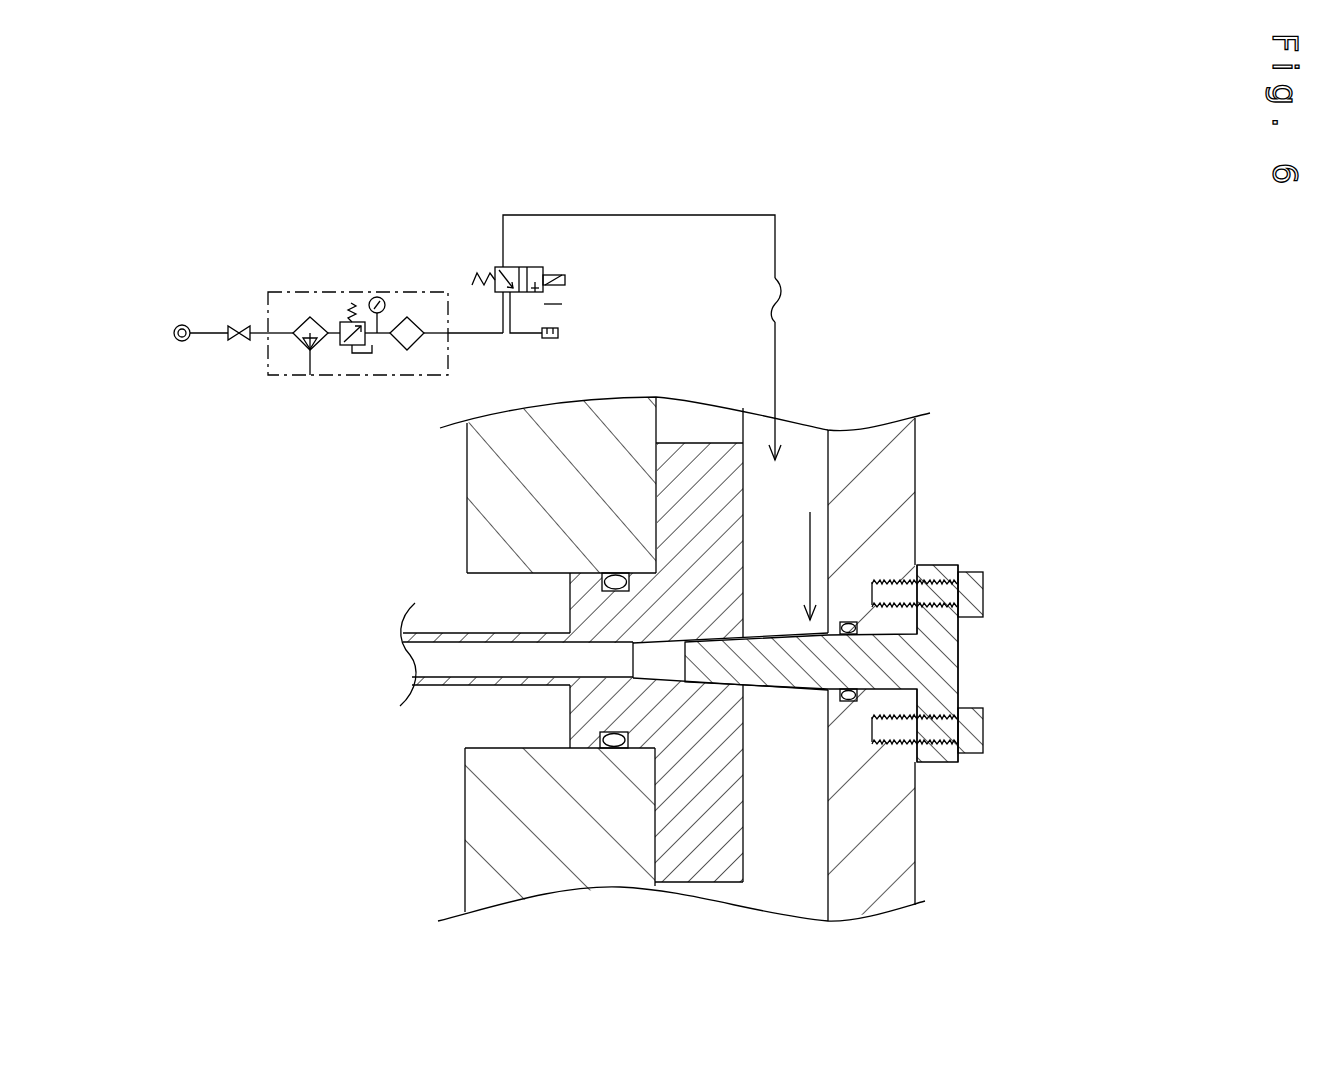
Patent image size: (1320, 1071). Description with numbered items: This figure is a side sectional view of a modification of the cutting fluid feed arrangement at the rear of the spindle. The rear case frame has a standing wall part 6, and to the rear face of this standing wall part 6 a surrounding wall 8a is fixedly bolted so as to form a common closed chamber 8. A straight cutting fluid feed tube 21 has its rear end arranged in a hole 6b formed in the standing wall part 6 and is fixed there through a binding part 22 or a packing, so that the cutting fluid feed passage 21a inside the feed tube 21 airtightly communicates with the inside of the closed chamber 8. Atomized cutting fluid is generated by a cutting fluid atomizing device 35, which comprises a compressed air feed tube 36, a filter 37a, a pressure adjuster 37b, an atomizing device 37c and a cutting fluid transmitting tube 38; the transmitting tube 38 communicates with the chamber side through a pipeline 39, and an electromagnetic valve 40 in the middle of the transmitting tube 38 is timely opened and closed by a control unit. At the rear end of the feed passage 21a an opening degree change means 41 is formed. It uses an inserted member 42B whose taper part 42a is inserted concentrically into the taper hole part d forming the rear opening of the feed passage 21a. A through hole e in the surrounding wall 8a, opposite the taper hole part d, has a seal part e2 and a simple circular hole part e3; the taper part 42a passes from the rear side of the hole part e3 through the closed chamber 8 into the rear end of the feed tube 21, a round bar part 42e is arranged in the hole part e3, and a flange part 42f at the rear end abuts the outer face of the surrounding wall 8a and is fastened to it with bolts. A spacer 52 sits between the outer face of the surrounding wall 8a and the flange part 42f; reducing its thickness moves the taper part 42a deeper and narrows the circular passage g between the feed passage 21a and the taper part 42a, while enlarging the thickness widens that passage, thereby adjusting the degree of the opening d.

The standing wall part 6 is at (465, 873).
The hole 6b is at (405, 760).
The closed chamber 8 is at (807, 437).
The surrounding wall 8a is at (917, 441).
The cutting fluid feed tube 21 is at (450, 633).
The cutting fluid feed passage 21a is at (520, 642).
The binding part 22 is at (742, 856).
The cutting fluid atomizing device 35 is at (393, 290).
The compressed air feed tube 36 is at (203, 330).
The filter 37a is at (297, 318).
The pressure adjuster 37b is at (340, 347).
The atomizing device 37c is at (407, 350).
The cutting fluid transmitting tube 38 is at (480, 334).
The pipeline 39 is at (707, 215).
The electromagnetic valve 40 is at (538, 266).
The opening degree change means 41 is at (982, 560).
The inserted member 42B is at (795, 471).
The taper part 42a is at (758, 633).
The round bar part 42e is at (870, 690).
The flange part 42f is at (960, 635).
The spacer 52 is at (873, 602).
The taper hole part d is at (640, 657).
The through hole e is at (1092, 628).
The seal part e2 is at (867, 670).
The circular hole part e3 is at (903, 678).
The circular passage g is at (705, 686).